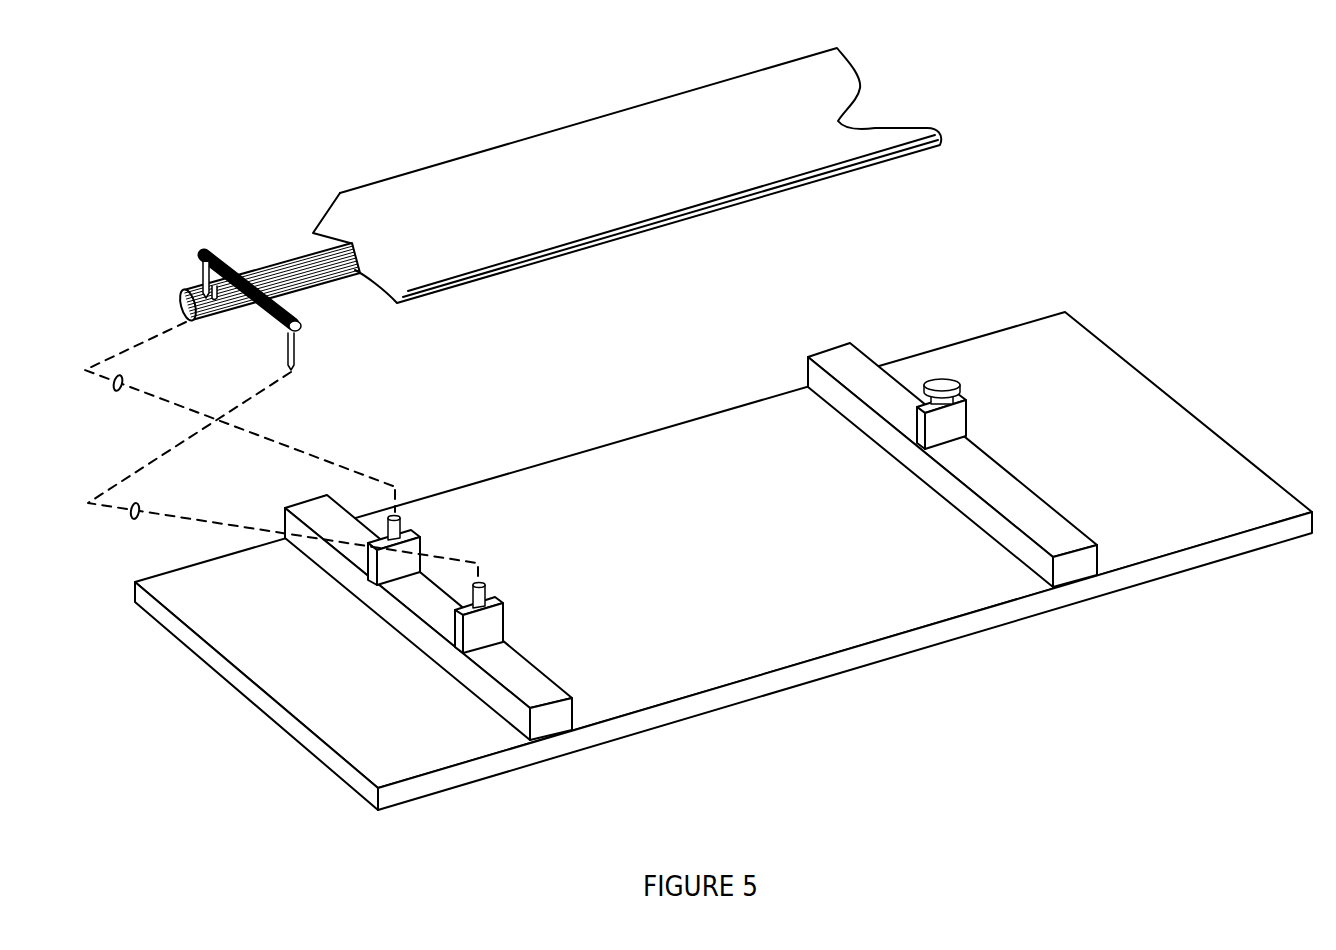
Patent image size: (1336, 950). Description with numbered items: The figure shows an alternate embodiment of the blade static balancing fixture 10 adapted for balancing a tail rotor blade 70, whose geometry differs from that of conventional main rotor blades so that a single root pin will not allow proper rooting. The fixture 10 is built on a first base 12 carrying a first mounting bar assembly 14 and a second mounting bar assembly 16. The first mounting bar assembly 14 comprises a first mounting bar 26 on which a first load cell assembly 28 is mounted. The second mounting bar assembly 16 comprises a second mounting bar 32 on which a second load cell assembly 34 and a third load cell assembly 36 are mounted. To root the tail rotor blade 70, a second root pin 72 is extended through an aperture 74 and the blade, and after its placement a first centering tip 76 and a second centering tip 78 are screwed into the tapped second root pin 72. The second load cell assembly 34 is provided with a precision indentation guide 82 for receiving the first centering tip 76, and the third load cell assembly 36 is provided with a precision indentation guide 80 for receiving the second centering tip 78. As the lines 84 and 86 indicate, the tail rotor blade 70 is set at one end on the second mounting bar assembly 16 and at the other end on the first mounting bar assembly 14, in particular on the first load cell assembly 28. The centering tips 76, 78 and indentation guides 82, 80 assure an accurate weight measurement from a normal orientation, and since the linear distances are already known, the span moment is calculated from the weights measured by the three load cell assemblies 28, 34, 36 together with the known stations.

The blade static balancing fixture 10 is at (723, 541).
The first base 12 is at (668, 472).
The first mounting bar assembly 14 is at (1027, 451).
The second mounting bar assembly 16 is at (358, 638).
The first mounting bar 26 is at (941, 431).
The first load cell assembly 28 is at (1000, 382).
The second mounting bar 32 is at (376, 545).
The second load cell assembly 34 is at (445, 527).
The third load cell assembly 36 is at (537, 593).
The tail rotor blade 70 is at (446, 131).
The second root pin 72 is at (210, 247).
The aperture 74 is at (259, 296).
The first centering tip 76 is at (297, 355).
The second centering tip 78 is at (200, 277).
The precision indentation guide 80 is at (397, 516).
The precision indentation guide 82 is at (481, 584).
The line 84 is at (113, 395).
The line 86 is at (132, 522).